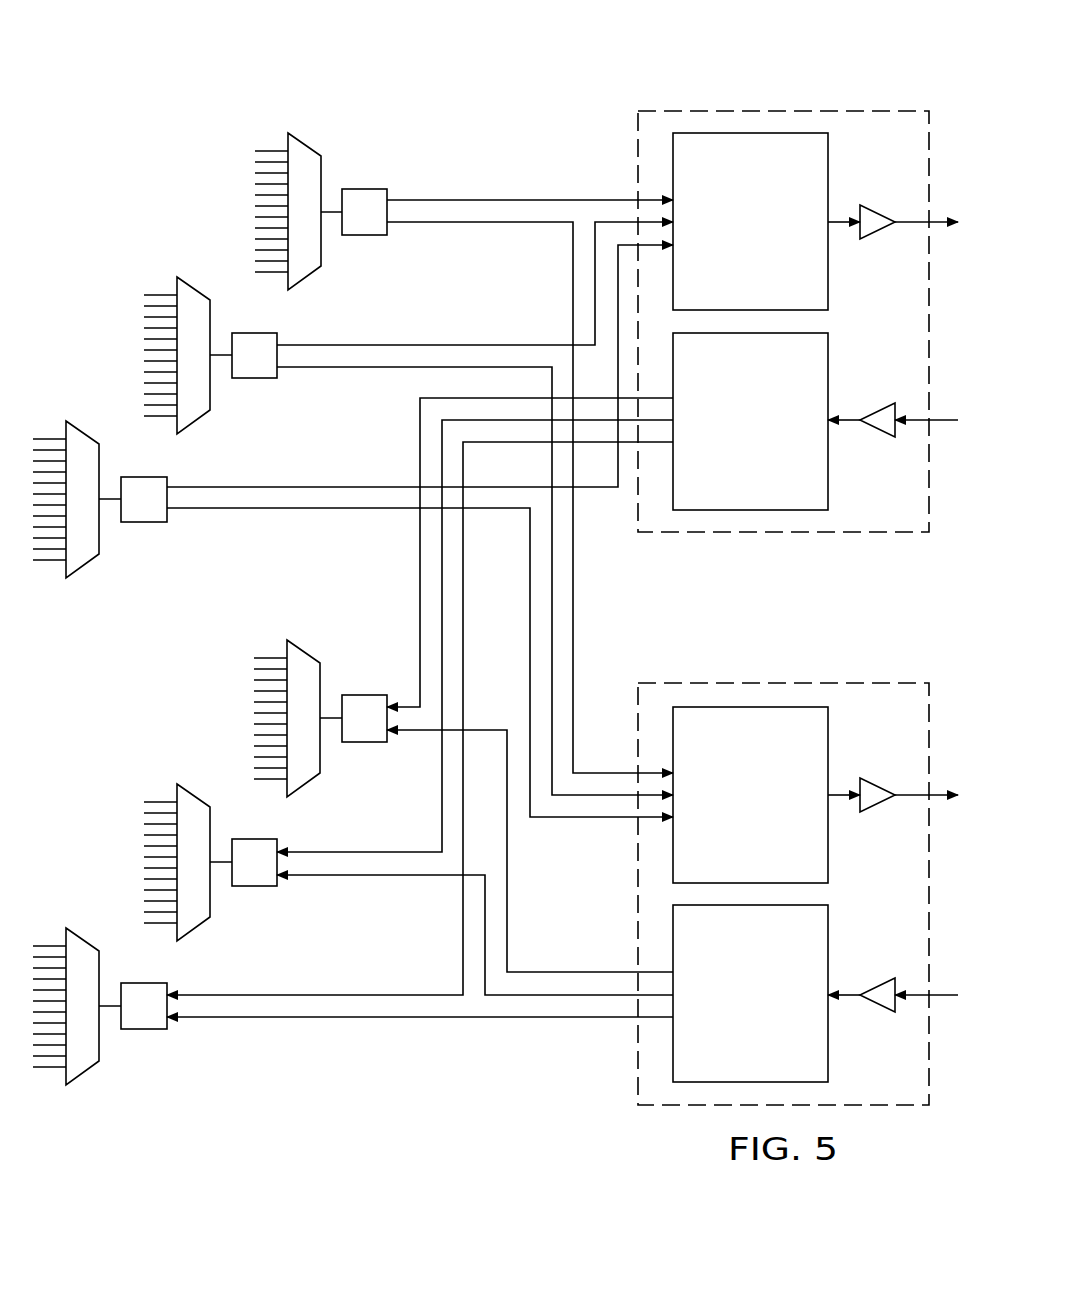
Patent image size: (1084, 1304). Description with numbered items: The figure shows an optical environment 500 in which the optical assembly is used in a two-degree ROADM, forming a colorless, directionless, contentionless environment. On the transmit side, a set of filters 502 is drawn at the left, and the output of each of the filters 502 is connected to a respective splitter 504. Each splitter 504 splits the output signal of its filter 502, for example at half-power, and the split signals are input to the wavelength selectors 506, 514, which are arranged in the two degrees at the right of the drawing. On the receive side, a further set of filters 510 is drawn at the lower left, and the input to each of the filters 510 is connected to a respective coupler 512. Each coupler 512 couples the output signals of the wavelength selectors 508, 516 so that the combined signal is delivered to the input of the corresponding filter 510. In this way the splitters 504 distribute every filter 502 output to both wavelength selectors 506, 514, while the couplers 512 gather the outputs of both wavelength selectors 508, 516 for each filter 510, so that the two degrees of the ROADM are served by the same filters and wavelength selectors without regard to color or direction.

The optical environment 500 is at (448, 67).
The filters 502 is at (304, 145).
The splitter 504 is at (369, 189).
The wavelength selector 506 is at (730, 264).
The wavelength selector 508 is at (730, 463).
The filters 510 is at (308, 784).
The coupler 512 is at (366, 743).
The wavelength selector 514 is at (730, 837).
The wavelength selector 516 is at (730, 1035).